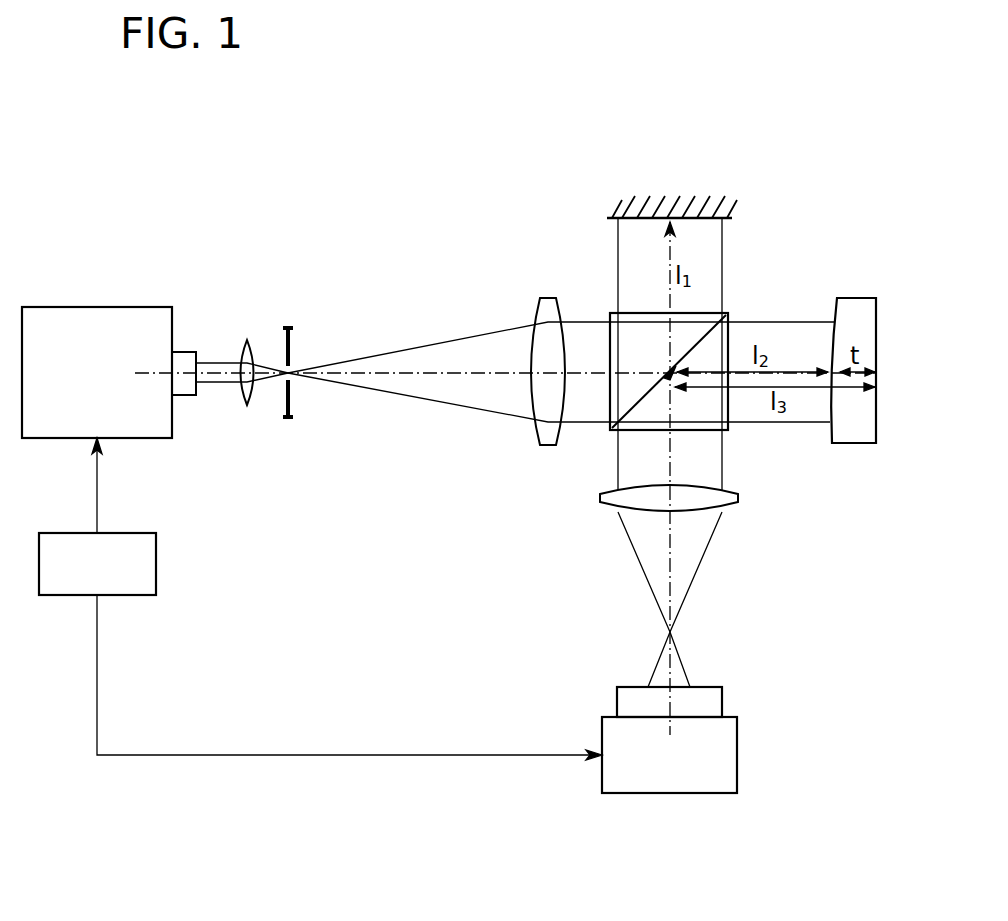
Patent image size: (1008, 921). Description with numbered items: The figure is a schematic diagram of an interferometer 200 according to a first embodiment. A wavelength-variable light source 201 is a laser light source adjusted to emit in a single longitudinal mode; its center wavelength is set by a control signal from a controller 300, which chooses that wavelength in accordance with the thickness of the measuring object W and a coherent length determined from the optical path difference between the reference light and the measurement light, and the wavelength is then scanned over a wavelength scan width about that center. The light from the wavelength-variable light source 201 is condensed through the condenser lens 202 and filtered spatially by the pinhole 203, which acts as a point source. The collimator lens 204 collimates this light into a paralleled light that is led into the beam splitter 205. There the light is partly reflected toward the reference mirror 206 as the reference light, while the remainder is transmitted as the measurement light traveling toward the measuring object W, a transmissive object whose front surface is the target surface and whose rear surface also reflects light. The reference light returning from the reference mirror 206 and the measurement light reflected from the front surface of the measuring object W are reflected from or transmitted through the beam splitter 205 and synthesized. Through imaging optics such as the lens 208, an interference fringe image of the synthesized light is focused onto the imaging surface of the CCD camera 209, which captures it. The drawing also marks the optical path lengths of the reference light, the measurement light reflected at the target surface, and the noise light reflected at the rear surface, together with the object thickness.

The interferometer 200 is at (817, 638).
The wavelength-variable light source 201 is at (96, 307).
The condenser lens 202 is at (247, 340).
The pinhole 203 is at (291, 368).
The collimator lens 204 is at (548, 298).
The beam splitter 205 is at (728, 427).
The reference mirror 206 is at (693, 220).
The lens 208 is at (738, 498).
The CCD camera 209 is at (737, 755).
The controller 300 is at (156, 565).
The measuring object W is at (857, 298).